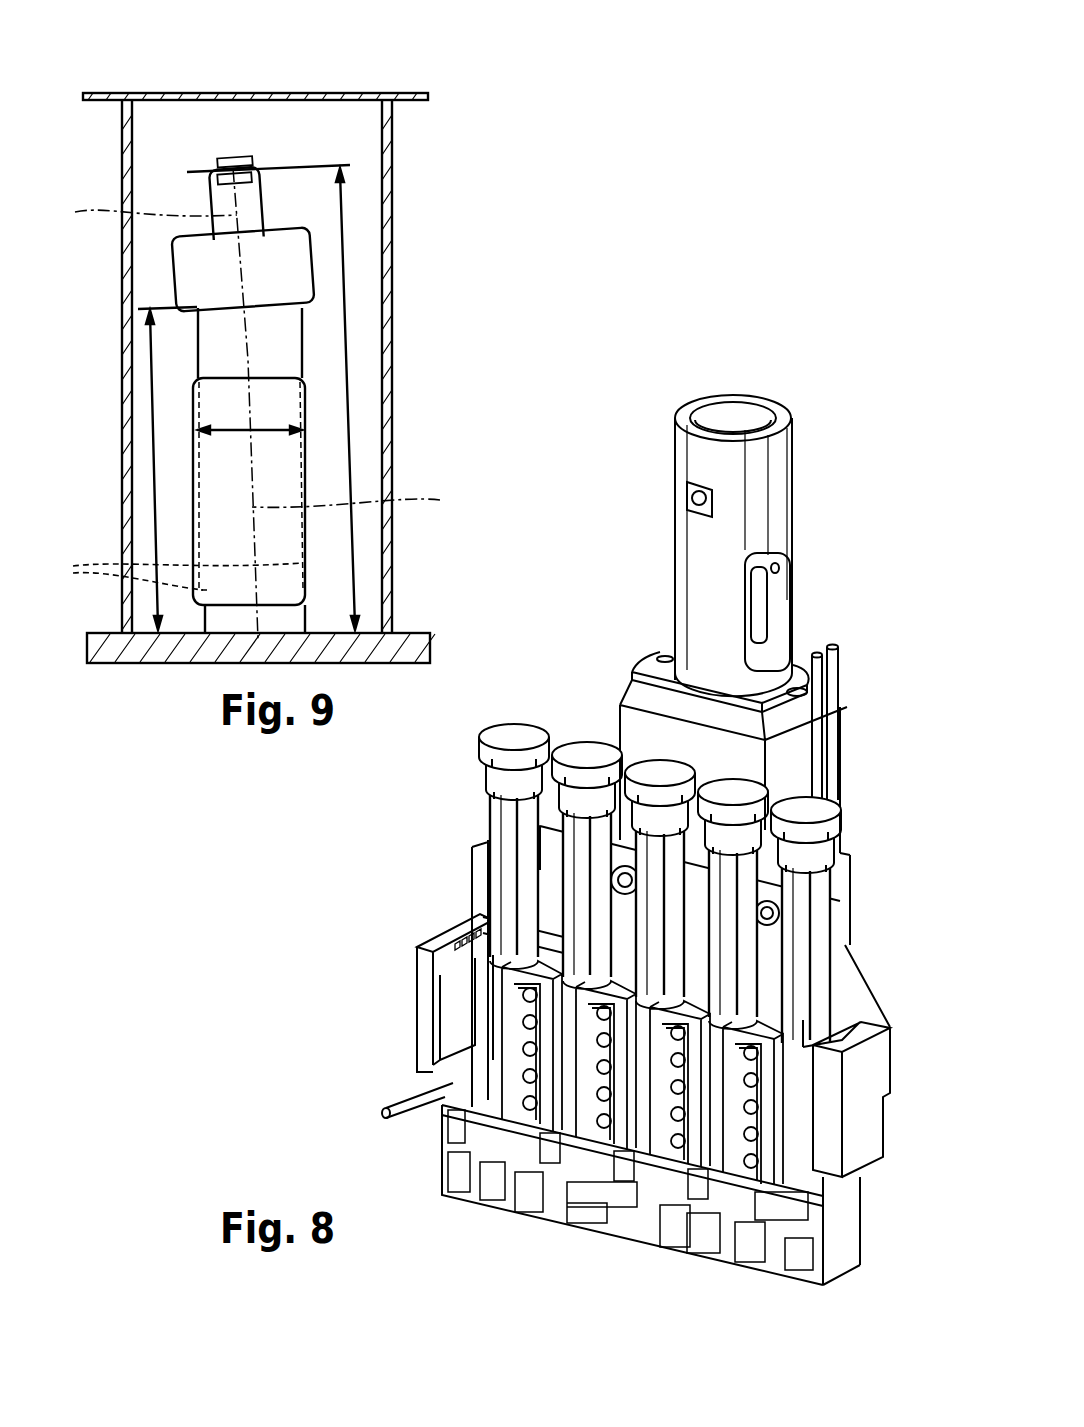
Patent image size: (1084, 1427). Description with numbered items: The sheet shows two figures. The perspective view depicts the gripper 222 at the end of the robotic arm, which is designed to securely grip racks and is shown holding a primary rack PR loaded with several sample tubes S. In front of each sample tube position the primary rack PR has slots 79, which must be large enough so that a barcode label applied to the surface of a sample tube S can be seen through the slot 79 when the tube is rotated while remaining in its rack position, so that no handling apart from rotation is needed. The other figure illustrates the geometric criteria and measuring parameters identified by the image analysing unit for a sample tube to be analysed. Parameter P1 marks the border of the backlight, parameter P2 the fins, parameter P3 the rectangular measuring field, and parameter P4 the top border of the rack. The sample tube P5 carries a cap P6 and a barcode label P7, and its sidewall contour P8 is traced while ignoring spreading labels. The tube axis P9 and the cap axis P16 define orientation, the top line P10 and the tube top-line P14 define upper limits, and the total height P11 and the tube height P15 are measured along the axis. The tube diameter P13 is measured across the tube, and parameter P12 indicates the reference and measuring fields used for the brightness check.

In FIG. 9, the border of the backlight P1 is at (210, 93).
In FIG. 9, the fins P2 is at (385, 213).
In FIG. 9, the rectangular measuring field P3 is at (152, 158).
In FIG. 9, the top border of the rack P4 is at (412, 633).
In FIG. 9, the sample tube P5 is at (280, 352).
In FIG. 9, the cap P6 is at (200, 276).
In FIG. 9, the barcode label P7 is at (220, 528).
In FIG. 9, the sidewall contour P8 is at (171, 572).
In FIG. 9, the tube axis P9 is at (364, 507).
In FIG. 9, the top line P10 is at (213, 168).
In FIG. 9, the total height P11 is at (350, 448).
In FIG. 9, the reference and measuring fields for brightness check P12 is at (258, 170).
In FIG. 9, the tube diameter P13 is at (250, 415).
In FIG. 9, the tube top-line P14 is at (280, 312).
In FIG. 9, the tube height P15 is at (150, 447).
In FIG. 9, the cap axis P16 is at (132, 214).
In FIG. 8, the gripper 222 is at (655, 584).
In FIG. 8, the sample tube S is at (596, 747).
In FIG. 8, the slots 79 is at (512, 1108).
In FIG. 8, the primary rack PR is at (855, 1225).